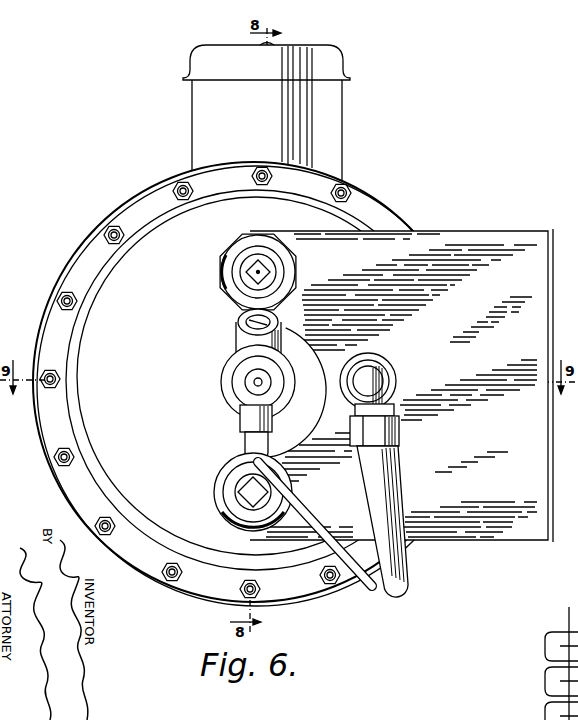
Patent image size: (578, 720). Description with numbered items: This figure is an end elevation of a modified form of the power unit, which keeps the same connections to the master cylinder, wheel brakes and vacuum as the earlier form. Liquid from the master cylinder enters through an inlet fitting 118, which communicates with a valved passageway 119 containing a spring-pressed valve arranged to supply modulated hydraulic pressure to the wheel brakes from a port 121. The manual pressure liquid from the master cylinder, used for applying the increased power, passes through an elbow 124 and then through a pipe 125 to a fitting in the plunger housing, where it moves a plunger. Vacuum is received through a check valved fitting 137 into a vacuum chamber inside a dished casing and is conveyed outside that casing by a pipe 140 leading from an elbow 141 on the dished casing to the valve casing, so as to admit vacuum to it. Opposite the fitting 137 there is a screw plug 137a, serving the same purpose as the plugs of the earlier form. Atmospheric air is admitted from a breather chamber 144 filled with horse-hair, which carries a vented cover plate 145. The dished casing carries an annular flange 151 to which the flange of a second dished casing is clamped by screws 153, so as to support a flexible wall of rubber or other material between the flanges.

The vented cover plate 145 is at (332, 60).
The breather chamber 144 is at (322, 120).
The screws 153 is at (349, 187).
The annular flange 151 is at (396, 202).
The check valved fitting 137 is at (270, 272).
The port 121 is at (277, 316).
The valved passageway 119 is at (252, 381).
The inlet fitting 118 is at (238, 392).
The elbow 124 is at (250, 442).
The screw plug 137a is at (242, 497).
The pipe 125 is at (307, 510).
The elbow 141 is at (395, 380).
The pipe 140 is at (404, 558).